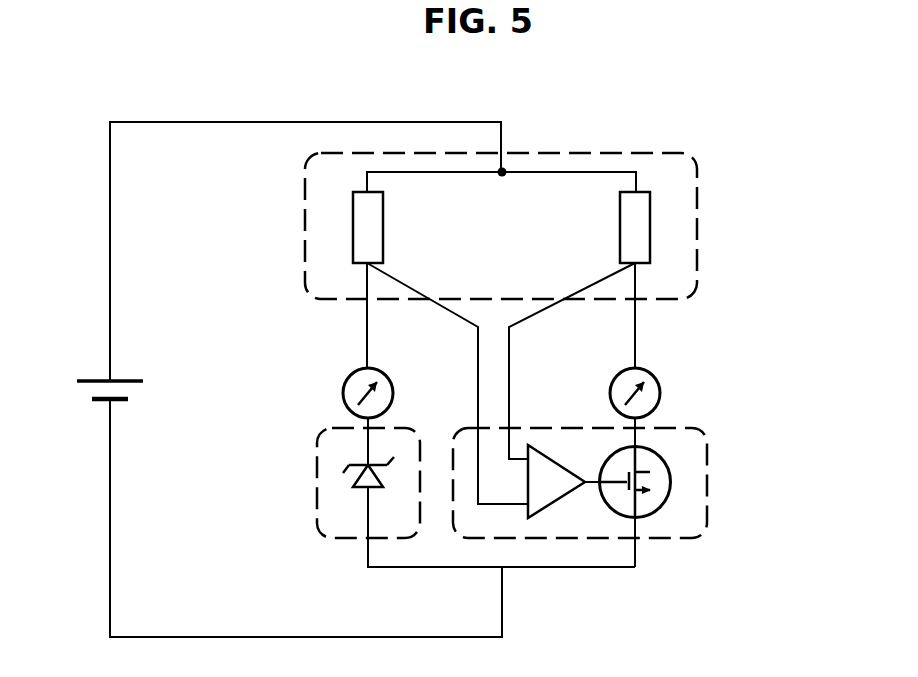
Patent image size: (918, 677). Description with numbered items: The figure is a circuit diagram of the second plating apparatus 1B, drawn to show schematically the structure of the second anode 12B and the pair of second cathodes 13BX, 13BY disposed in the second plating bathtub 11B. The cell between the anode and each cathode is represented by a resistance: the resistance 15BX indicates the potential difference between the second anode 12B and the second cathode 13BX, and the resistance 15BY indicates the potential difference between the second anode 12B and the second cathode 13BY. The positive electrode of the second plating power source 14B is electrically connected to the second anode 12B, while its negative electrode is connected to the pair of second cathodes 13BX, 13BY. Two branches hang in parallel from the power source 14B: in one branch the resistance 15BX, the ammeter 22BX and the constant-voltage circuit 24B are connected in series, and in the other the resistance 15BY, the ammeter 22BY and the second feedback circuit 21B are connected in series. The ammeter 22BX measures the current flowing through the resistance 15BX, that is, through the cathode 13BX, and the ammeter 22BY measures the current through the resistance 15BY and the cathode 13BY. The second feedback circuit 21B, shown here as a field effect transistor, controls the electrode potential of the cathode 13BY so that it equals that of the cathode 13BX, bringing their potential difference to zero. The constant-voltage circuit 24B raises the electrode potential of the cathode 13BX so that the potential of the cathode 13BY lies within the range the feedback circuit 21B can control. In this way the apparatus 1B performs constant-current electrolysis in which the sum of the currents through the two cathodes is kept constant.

The second plating apparatus 1B is at (730, 109).
The second plating bathtub 11B is at (500, 205).
The second anode 12B is at (502, 172).
The second cathode 13BX is at (353, 265).
The second cathode 13BY is at (650, 265).
The second plating power source 14B is at (90, 380).
The resistance 15BX is at (353, 222).
The resistance 15BY is at (650, 222).
The second feedback circuit 21B is at (707, 468).
The ammeter 22BX is at (343, 393).
The ammeter 22BY is at (660, 393).
The constant-voltage circuit 24B is at (317, 473).